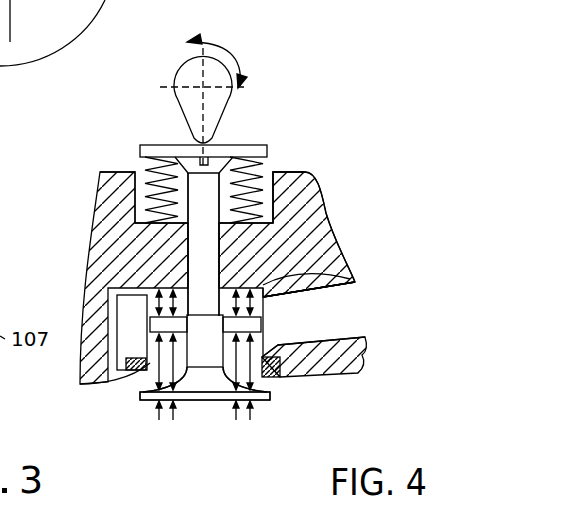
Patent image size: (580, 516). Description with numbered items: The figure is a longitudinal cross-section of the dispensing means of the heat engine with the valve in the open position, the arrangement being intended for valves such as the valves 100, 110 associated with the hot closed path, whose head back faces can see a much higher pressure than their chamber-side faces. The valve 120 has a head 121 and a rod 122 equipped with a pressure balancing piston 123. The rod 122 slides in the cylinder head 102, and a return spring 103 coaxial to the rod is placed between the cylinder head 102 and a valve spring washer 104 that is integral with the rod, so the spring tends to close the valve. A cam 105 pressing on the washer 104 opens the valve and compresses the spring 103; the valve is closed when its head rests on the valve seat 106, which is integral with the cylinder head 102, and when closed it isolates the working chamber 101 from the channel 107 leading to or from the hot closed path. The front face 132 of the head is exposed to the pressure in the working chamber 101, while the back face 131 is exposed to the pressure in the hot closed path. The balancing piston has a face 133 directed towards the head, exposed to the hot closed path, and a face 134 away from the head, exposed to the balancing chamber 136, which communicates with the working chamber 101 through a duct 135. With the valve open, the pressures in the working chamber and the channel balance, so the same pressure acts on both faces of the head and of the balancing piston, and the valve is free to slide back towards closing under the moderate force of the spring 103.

The valve 100 is at (328, 244).
The working chamber 101 is at (270, 418).
The cylinder head 102 is at (302, 197).
The return spring 103 is at (276, 160).
The valve spring washer 104 is at (259, 140).
The cam 105 is at (242, 82).
The valve seat 106 is at (296, 365).
The channel 107 is at (337, 322).
The valve 110 is at (328, 244).
The valve 120 is at (172, 246).
The head 121 is at (176, 391).
The rod 122 is at (200, 236).
The pressure balancing piston 123 is at (337, 265).
The back face 131 is at (276, 385).
The front face 132 is at (210, 412).
The face 133 is at (133, 385).
The face 134 is at (162, 297).
The duct 135 is at (100, 322).
The balancing chamber 136 is at (292, 240).